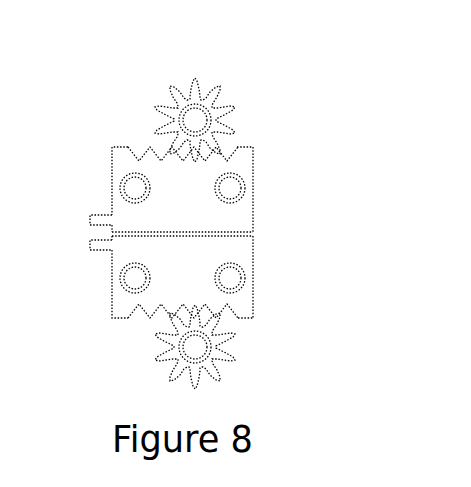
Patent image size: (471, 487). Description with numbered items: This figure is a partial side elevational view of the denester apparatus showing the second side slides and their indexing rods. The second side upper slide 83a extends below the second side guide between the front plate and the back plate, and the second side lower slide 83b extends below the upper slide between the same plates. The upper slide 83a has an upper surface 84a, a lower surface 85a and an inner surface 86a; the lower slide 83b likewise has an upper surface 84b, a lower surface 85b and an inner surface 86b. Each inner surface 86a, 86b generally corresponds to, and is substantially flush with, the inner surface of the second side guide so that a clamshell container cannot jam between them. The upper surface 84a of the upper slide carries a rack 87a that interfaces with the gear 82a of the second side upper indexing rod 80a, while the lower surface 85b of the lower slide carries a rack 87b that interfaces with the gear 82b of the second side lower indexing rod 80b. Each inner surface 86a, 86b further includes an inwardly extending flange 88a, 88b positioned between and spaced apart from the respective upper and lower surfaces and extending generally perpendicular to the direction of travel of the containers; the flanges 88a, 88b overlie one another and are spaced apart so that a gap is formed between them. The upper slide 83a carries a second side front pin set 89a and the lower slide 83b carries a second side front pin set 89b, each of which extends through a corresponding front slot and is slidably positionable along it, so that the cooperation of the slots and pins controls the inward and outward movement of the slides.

The second side upper indexing rod 80a is at (233, 92).
The second side lower indexing rod 80b is at (232, 373).
The gear 82a is at (214, 122).
The gear 82b is at (213, 352).
The second side upper slide 83a is at (289, 210).
The second side lower slide 83b is at (289, 290).
The upper surface 84a is at (251, 147).
The upper surface 84b is at (237, 240).
The lower surface 85a is at (242, 229).
The lower surface 85b is at (250, 321).
The inner surface 86a is at (110, 185).
The inner surface 86b is at (110, 286).
The rack 87a is at (147, 147).
The rack 87b is at (127, 320).
The inwardly extending flange 88a is at (89, 222).
The inwardly extending flange 88b is at (89, 250).
The second side front pin set 89a is at (243, 183).
The second side front pin set 89b is at (245, 290).